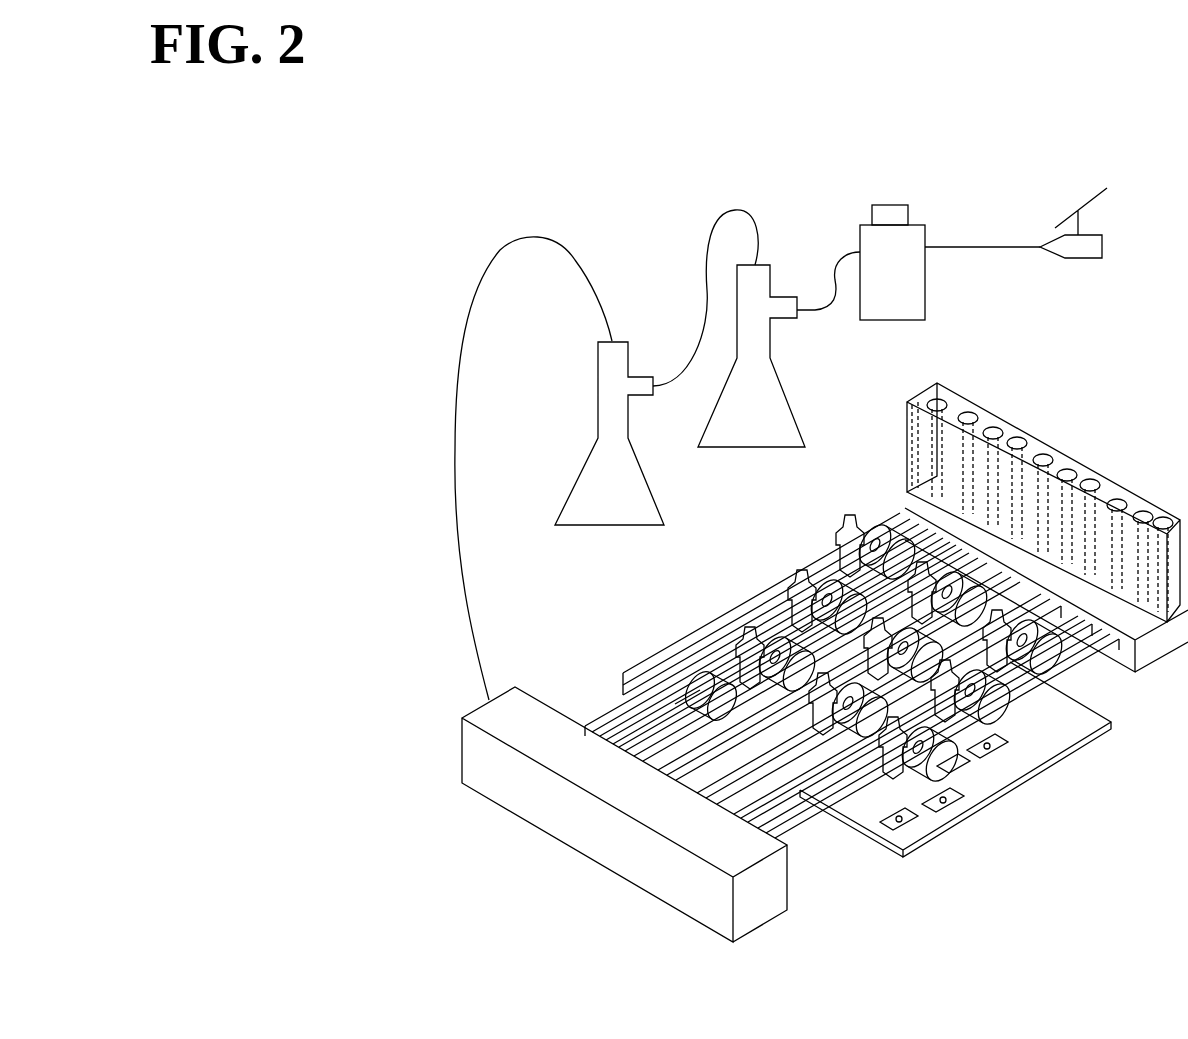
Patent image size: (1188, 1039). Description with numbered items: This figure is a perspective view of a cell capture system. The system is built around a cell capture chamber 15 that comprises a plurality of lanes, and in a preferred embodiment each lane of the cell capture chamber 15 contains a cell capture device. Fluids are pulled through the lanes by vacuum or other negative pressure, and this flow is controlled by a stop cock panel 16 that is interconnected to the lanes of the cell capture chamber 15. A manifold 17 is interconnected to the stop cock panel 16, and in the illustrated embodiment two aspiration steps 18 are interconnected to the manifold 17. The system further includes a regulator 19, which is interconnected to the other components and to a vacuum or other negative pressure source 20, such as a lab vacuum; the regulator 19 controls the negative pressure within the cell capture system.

The cell capture chamber 15 is at (1128, 493).
The stop cock panel 16 is at (1033, 785).
The manifold 17 is at (624, 814).
The aspiration steps 18 is at (730, 237).
The regulator 19 is at (918, 262).
The negative pressure source 20 is at (1063, 198).